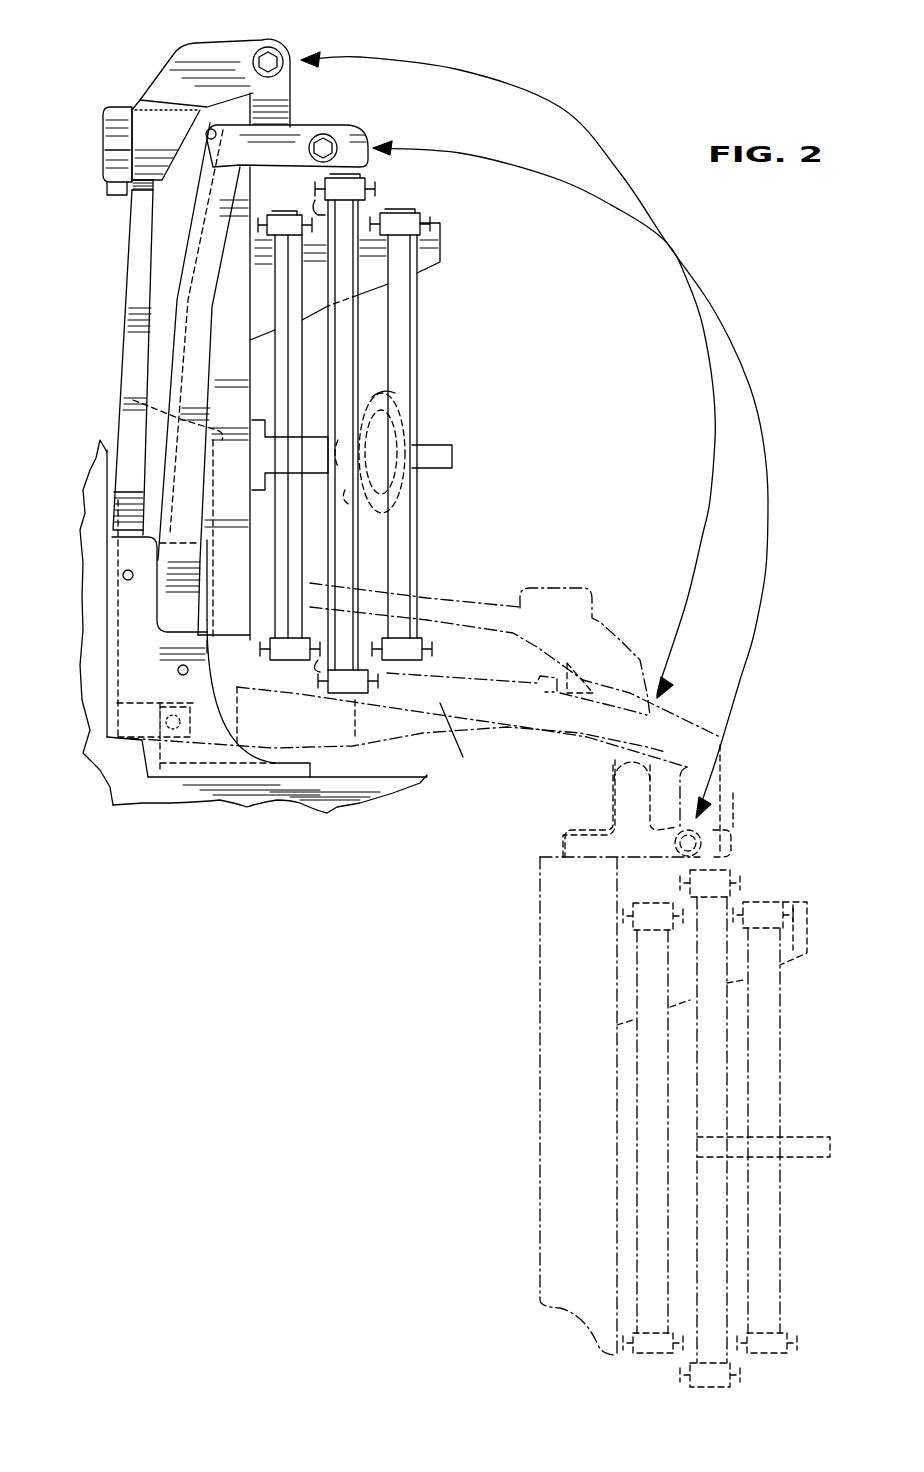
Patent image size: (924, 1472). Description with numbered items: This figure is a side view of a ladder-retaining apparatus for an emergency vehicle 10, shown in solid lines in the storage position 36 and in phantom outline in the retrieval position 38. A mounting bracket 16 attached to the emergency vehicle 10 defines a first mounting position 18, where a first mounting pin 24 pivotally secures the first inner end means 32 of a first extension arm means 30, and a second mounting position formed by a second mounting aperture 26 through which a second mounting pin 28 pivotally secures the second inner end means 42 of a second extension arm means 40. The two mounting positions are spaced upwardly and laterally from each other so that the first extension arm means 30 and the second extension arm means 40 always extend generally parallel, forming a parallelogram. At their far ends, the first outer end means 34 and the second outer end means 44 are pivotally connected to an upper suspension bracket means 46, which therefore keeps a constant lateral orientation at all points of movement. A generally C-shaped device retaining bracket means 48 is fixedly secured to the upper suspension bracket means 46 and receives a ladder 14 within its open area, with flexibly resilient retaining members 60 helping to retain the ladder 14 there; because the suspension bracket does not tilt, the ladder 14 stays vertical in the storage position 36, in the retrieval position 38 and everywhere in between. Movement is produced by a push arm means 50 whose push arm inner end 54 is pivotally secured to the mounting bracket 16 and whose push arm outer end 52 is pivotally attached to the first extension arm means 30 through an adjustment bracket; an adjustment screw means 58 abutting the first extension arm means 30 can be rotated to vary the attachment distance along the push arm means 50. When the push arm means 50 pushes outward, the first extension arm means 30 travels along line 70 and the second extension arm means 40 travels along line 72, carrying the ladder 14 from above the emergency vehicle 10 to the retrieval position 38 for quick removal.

The emergency vehicle 10 is at (283, 790).
The ladder 14 is at (410, 345).
The mounting bracket 16 is at (140, 747).
The first mounting position 18 is at (112, 585).
The first mounting pin 24 is at (123, 574).
The second mounting aperture 26 is at (183, 673).
The second mounting pin 28 is at (178, 669).
The first extension arm means 30 is at (145, 147).
The first inner end means 32 is at (125, 497).
The first outer end means 34 is at (205, 63).
The storage position 36 is at (480, 397).
The retrieval position 38 is at (540, 1048).
The second extension arm means 40 is at (190, 310).
The second inner end means 42 is at (180, 572).
The second outer end means 44 is at (295, 143).
The upper suspension bracket means 46 is at (277, 107).
The device retaining bracket means 48 is at (237, 370).
The push arm means 50 is at (285, 733).
The push arm outer end 52 is at (150, 190).
The push arm inner end 54 is at (133, 400).
The adjustment screw means 58 is at (118, 122).
The flexibly resilient retaining members 60 is at (400, 395).
The line 70 is at (378, 58).
The line 72 is at (410, 150).